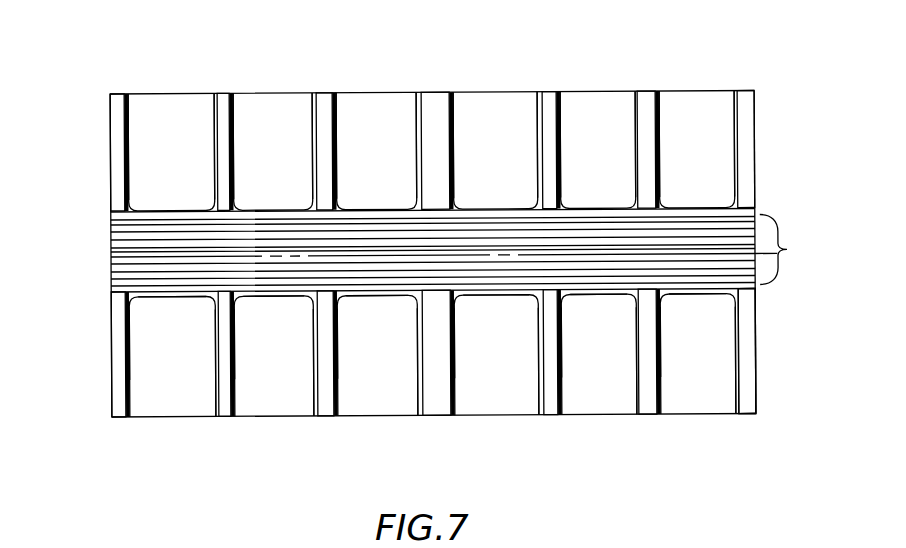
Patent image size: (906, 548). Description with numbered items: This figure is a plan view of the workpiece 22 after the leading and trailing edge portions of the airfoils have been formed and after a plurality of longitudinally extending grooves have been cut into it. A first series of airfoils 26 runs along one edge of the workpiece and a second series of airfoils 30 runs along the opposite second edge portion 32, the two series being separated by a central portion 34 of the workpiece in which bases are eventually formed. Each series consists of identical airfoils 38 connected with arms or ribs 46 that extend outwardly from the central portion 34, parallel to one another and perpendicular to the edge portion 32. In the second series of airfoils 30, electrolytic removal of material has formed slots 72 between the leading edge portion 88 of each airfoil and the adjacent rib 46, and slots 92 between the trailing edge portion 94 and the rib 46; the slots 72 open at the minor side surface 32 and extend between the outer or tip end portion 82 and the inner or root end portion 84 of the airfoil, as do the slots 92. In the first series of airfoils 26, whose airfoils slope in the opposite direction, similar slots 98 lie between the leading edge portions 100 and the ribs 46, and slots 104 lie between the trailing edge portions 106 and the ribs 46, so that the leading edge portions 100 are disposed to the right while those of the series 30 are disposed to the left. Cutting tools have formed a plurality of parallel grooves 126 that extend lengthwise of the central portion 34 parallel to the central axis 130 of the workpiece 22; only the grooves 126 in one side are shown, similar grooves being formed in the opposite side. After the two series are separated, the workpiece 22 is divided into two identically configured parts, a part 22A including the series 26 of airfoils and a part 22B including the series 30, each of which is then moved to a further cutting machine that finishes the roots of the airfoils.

The workpiece 22 is at (107, 130).
The workpiece part 22A is at (104, 178).
The workpiece part 22B is at (105, 352).
The first series of airfoils 26 is at (760, 148).
The second series of airfoils 30 is at (772, 361).
The second edge portion 32 is at (755, 421).
The central portion 34 is at (112, 252).
The airfoil 38 is at (151, 91).
The rib 46 is at (116, 78).
The slot 72 is at (128, 418).
The tip end portion 82 is at (166, 418).
The root end portion 84 is at (187, 312).
The leading edge portion 88 is at (141, 365).
The slot 92 is at (212, 395).
The trailing edge portion 94 is at (213, 358).
The slot 98 is at (213, 93).
The leading edge portion 100 is at (213, 170).
The slot 104 is at (128, 93).
The trailing edge portion 106 is at (131, 139).
The groove 126 is at (797, 249).
The central axis 130 is at (112, 257).